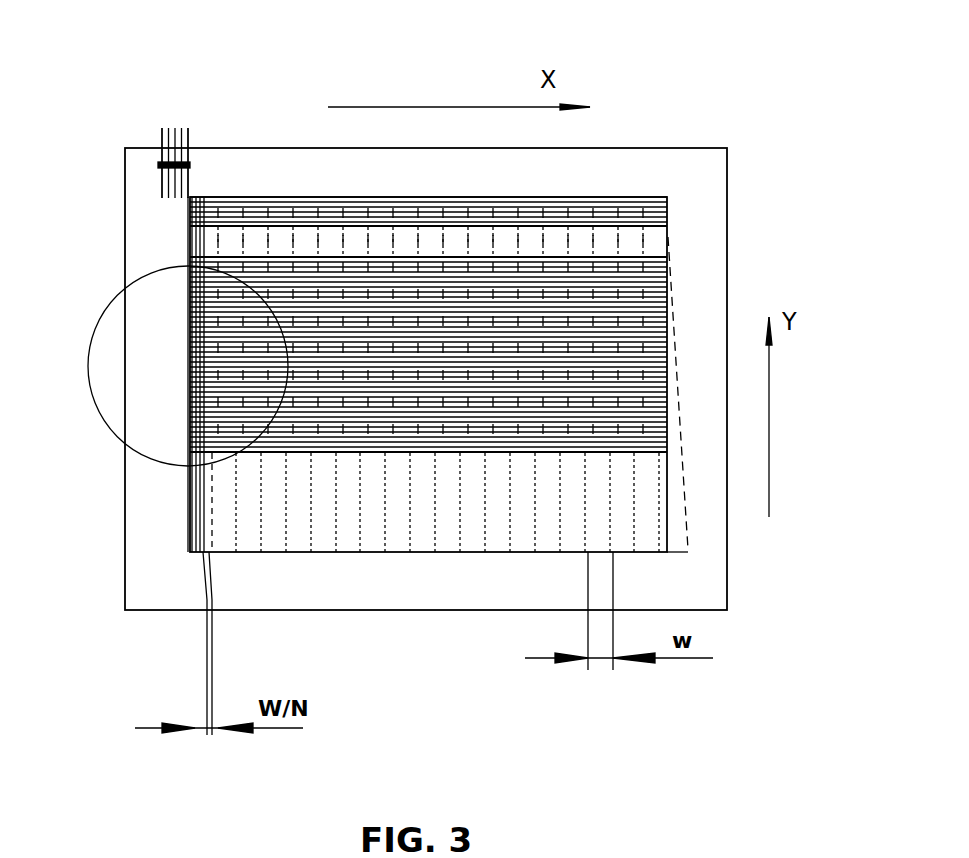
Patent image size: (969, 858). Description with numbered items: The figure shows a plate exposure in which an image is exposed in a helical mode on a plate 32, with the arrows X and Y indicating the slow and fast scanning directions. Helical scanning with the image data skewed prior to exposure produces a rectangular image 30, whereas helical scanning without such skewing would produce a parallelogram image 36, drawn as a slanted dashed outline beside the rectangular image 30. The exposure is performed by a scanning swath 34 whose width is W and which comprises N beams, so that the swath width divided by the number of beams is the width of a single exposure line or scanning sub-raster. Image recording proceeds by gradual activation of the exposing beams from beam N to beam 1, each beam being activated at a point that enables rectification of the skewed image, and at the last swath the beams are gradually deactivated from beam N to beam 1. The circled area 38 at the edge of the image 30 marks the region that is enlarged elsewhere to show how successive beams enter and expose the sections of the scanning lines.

The beam 1 is at (192, 115).
The scanning swath 34 is at (172, 128).
The beam N is at (190, 137).
The rectangular image 30 is at (656, 221).
The plate 32 is at (707, 577).
The parallelogram image 36 is at (687, 520).
The area 38 is at (88, 366).